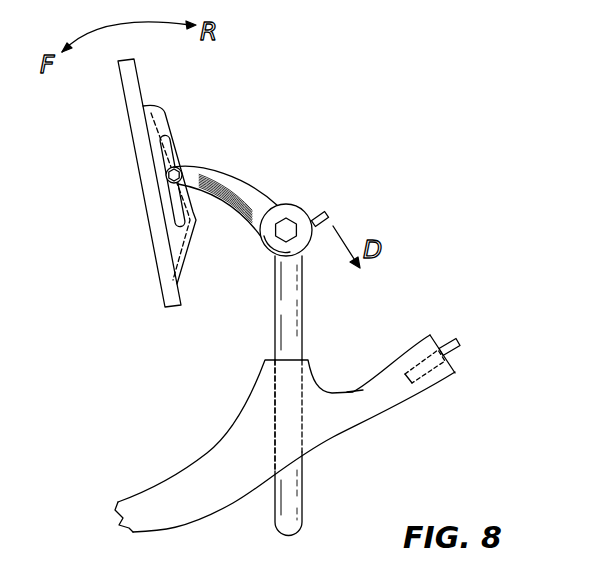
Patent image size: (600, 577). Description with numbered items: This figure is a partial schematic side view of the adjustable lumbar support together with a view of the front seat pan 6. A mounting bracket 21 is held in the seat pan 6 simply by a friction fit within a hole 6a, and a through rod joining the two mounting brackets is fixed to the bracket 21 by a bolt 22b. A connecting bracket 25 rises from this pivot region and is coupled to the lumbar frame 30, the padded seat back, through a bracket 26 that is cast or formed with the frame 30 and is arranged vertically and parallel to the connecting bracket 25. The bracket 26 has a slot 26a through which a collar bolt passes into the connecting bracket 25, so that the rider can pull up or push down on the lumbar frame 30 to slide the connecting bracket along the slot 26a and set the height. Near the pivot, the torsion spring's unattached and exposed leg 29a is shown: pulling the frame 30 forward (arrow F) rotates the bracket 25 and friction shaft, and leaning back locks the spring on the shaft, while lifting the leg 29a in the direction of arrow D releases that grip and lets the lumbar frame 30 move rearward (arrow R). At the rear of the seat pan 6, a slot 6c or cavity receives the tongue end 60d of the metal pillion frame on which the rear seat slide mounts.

The lumbar frame 30 is at (118, 107).
The bracket 26 is at (157, 110).
The slot 26a is at (180, 158).
The connecting bracket 25 is at (247, 183).
The bolt 22b is at (263, 233).
The leg of the torsion spring 29a is at (318, 209).
The mounting bracket 21 is at (297, 312).
The seat pan 6 is at (145, 500).
The hole 6a is at (273, 408).
The tongue end 60d is at (455, 338).
The slot 6c is at (437, 372).